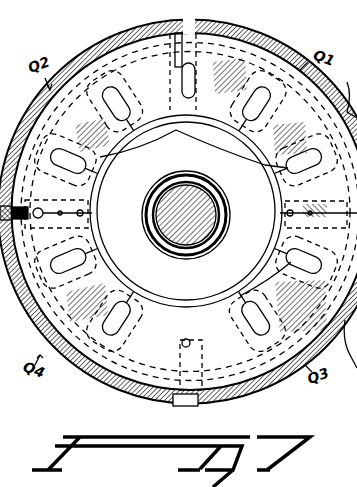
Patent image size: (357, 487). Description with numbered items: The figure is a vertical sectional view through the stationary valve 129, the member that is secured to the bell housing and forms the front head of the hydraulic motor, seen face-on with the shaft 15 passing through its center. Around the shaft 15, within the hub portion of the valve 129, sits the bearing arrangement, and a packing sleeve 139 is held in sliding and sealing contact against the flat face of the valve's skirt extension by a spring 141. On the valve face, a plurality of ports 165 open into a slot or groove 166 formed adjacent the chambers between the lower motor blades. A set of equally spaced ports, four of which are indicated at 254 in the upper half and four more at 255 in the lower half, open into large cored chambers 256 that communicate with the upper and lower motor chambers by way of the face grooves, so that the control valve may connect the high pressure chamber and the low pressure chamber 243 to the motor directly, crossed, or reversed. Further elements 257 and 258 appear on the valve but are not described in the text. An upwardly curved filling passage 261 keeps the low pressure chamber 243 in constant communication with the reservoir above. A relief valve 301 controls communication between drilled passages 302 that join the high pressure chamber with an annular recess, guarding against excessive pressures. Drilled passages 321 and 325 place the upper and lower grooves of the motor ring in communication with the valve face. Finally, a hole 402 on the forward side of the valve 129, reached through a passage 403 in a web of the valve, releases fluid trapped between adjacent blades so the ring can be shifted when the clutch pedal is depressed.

The shaft 15 is at (220, 214).
The stationary valve 129 is at (282, 54).
The packing sleeve 139 is at (215, 190).
The spring 141 is at (208, 172).
The ports 165 is at (325, 82).
The slot or groove 166 is at (280, 385).
The low pressure chamber 243 is at (205, 300).
The ports 254 is at (83, 167).
The ports 255 is at (237, 287).
The cored chambers 256 is at (83, 265).
The magnet 257 is at (120, 327).
The bolt 258 is at (173, 404).
The filling passage 261 is at (182, 87).
The relief valve 301 is at (56, 225).
The drilled passages 302 is at (90, 212).
The drilled passage 321 is at (177, 68).
The drilled passage 325 is at (192, 346).
The hole 402 is at (92, 215).
The passage 403 is at (96, 232).